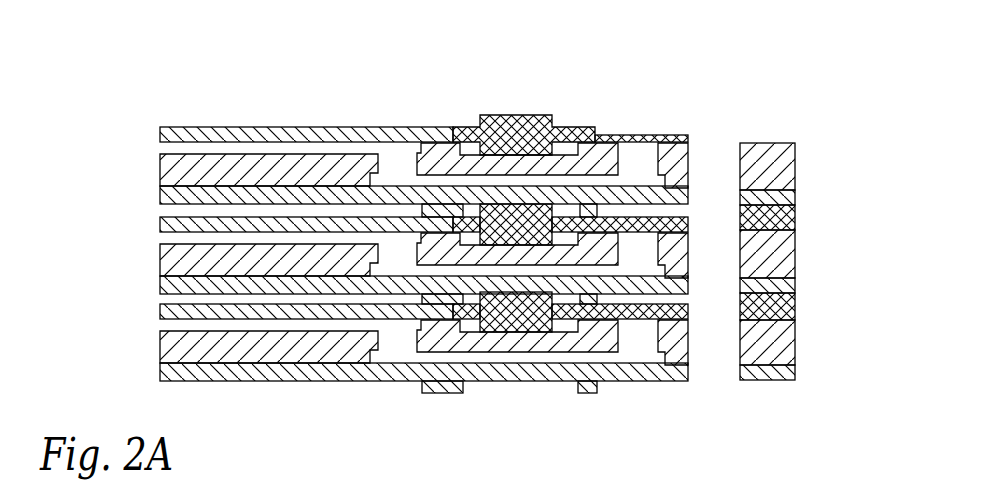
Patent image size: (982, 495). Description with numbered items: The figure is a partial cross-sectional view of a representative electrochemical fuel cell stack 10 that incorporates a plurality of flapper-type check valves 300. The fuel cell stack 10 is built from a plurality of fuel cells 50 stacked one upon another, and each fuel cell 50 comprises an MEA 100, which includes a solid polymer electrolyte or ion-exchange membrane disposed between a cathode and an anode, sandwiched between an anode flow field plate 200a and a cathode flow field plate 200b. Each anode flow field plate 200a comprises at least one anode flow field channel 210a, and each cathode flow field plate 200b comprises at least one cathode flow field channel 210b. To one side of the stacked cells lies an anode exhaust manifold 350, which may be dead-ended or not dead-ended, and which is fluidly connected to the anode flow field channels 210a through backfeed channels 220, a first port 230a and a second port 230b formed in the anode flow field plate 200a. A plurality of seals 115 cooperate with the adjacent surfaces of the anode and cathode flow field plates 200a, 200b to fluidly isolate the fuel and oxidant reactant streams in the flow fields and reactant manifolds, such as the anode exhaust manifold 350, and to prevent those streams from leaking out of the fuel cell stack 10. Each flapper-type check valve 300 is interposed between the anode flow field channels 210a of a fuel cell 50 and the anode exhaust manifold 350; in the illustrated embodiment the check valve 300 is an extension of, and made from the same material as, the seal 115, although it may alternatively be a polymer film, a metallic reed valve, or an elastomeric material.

The electrochemical fuel cell stack 10 is at (792, 86).
The anode flow field plate 200a is at (153, 140).
The cathode flow field plate 200b is at (153, 273).
The anode flow field channel 210a is at (247, 148).
The cathode flow field channel 210b is at (243, 298).
The backfeed channel 220 is at (436, 180).
The first port 230a is at (398, 163).
The second port 230b is at (658, 143).
The flapper-type check valve 300 is at (645, 160).
The seal 115 is at (535, 115).
The MEA 100 is at (160, 222).
The fuel cell 50 is at (800, 190).
The anode exhaust manifold 350 is at (712, 367).